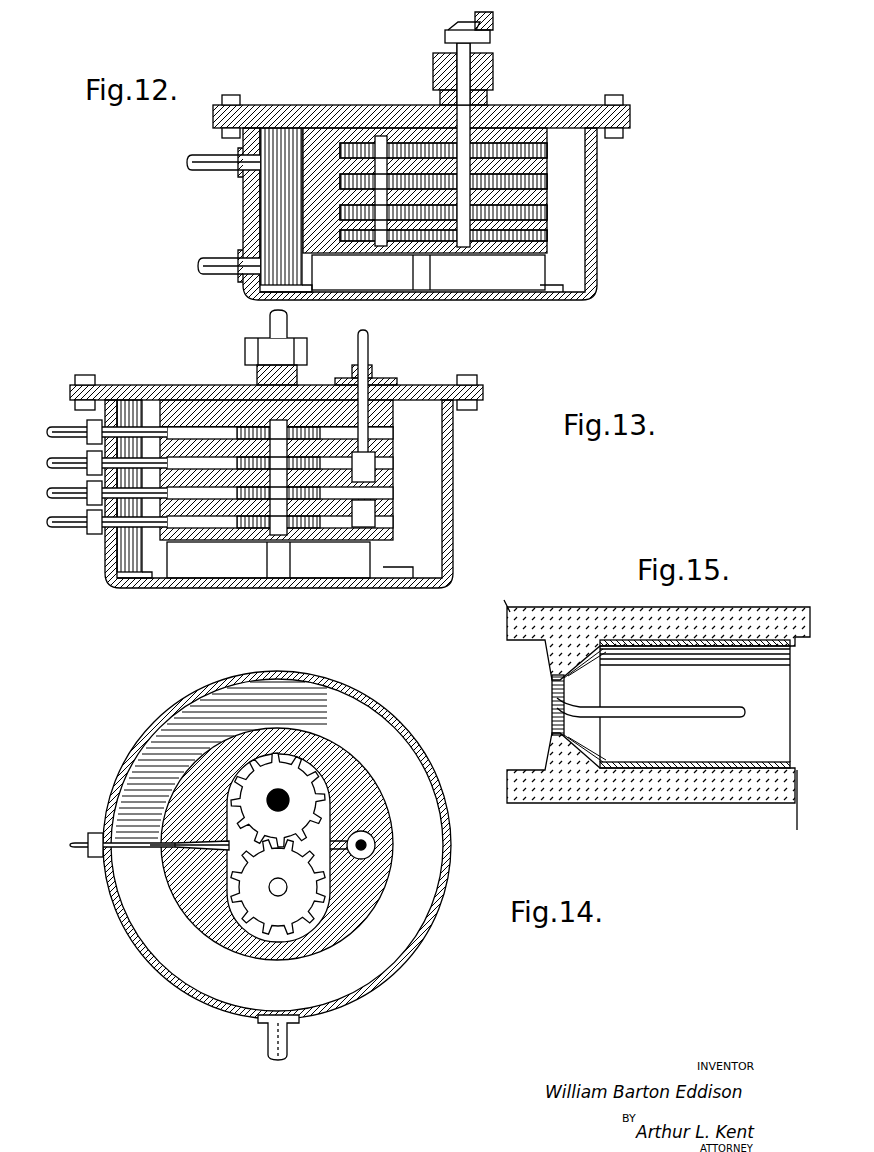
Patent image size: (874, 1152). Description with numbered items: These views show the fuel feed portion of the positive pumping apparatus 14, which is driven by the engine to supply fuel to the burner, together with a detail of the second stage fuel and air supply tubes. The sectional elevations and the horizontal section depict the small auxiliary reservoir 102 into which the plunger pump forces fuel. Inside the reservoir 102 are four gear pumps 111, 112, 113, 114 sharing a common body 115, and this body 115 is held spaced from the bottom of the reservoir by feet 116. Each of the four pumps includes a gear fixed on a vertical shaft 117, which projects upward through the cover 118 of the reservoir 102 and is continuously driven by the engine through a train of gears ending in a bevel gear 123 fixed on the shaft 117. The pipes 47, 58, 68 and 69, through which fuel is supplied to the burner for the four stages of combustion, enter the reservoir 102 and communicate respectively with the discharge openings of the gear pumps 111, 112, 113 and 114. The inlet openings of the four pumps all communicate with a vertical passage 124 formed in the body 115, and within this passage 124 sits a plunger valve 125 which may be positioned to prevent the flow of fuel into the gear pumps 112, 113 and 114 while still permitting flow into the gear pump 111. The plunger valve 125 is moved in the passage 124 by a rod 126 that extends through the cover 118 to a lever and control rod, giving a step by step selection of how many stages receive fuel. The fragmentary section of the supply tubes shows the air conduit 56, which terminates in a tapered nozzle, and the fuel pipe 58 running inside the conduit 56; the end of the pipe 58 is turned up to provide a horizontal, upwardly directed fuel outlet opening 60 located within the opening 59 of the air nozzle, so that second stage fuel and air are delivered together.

In FIG. 12, the positive pumping apparatus 14 is at (597, 245).
In FIG. 13, the positive pumping apparatus 14 is at (66, 430).
In FIG. 13, the pipe 47 is at (65, 528).
In FIG. 15, the conduit 56 is at (657, 715).
In FIG. 13, the pipe 58 is at (50, 498).
In FIG. 15, the pipe 58 is at (690, 718).
In FIG. 15, the opening 59 is at (552, 718).
In FIG. 15, the fuel outlet opening 60 is at (558, 692).
In FIG. 13, the pipe 68 is at (43, 466).
In FIG. 13, the pipe 69 is at (58, 436).
In FIG. 12, the auxiliary reservoir 102 is at (583, 200).
In FIG. 13, the auxiliary reservoir 102 is at (428, 466).
In FIG. 14, the auxiliary reservoir 102 is at (277, 845).
In FIG. 12, the gear pump 111 is at (518, 233).
In FIG. 13, the gear pump 111 is at (247, 532).
In FIG. 14, the gear pump 111 is at (290, 757).
In FIG. 12, the gear pump 112 is at (518, 211).
In FIG. 13, the gear pump 112 is at (222, 518).
In FIG. 12, the gear pump 113 is at (518, 186).
In FIG. 13, the gear pump 113 is at (262, 457).
In FIG. 12, the gear pump 114 is at (518, 157).
In FIG. 13, the gear pump 114 is at (237, 430).
In FIG. 12, the body 115 is at (467, 250).
In FIG. 13, the body 115 is at (335, 585).
In FIG. 14, the body 115 is at (368, 902).
In FIG. 12, the feet 116 is at (308, 272).
In FIG. 13, the feet 116 is at (170, 570).
In FIG. 13, the vertical shaft 117 is at (266, 318).
In FIG. 12, the cover 118 is at (556, 105).
In FIG. 13, the cover 118 is at (427, 385).
In FIG. 12, the bevel gear 123 is at (443, 35).
In FIG. 13, the vertical passage 124 is at (368, 508).
In FIG. 13, the plunger valve 125 is at (364, 461).
In FIG. 13, the rod 126 is at (368, 340).